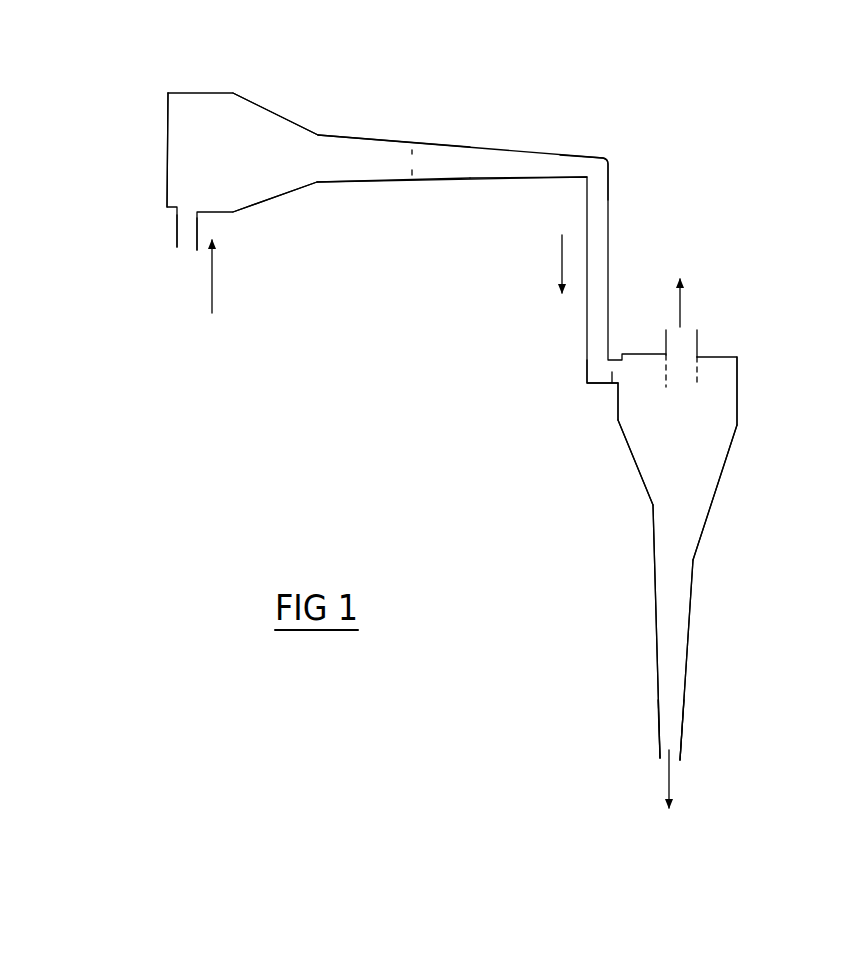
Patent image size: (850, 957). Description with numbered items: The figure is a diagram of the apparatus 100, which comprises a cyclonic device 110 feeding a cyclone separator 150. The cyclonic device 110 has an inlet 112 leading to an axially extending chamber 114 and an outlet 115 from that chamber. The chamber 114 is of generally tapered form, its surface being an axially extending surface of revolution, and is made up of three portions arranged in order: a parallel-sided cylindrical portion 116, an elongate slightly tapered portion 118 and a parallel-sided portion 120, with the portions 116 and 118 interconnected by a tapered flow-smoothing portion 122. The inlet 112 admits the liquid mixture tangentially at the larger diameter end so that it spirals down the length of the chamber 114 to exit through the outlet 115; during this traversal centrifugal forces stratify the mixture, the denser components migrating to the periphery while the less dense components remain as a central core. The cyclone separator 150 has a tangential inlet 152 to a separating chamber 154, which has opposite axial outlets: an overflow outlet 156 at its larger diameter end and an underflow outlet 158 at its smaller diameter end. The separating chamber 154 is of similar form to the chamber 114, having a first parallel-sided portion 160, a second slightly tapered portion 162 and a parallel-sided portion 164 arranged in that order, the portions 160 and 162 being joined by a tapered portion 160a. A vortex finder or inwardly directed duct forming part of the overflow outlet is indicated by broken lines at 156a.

The apparatus 100 is at (681, 137).
The cyclonic device 110 is at (386, 122).
The inlet 112 is at (176, 229).
The axially extending chamber 114 is at (270, 159).
The outlet 115 is at (592, 164).
The parallel-sided cylindrical portion 116 is at (193, 122).
The elongate slightly tapered portion 118 is at (371, 157).
The parallel-sided portion 120 is at (533, 167).
The tapered flow-smoothing portion 122 is at (259, 128).
The cyclone separator 150 is at (738, 470).
The tangential inlet 152 is at (612, 388).
The separating chamber 154 is at (690, 499).
The overflow outlet 156 is at (682, 348).
The vortex finder 156a is at (698, 385).
The underflow outlet 158 is at (672, 720).
The first parallel-sided portion 160 is at (738, 398).
The tapered portion 160a is at (640, 478).
The second slightly tapered portion 162 is at (670, 573).
The parallel-sided portion 164 is at (661, 690).